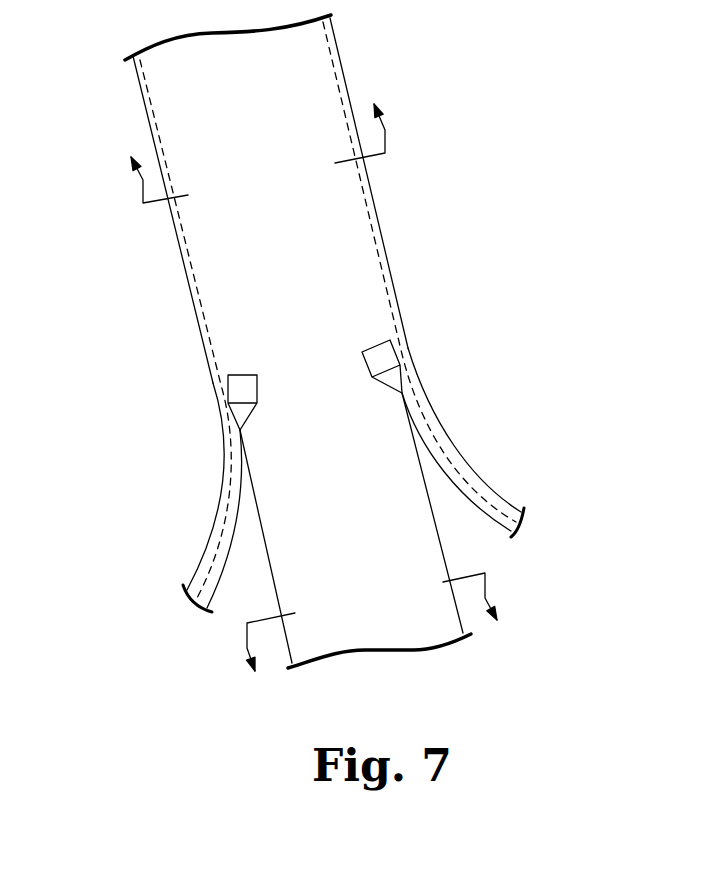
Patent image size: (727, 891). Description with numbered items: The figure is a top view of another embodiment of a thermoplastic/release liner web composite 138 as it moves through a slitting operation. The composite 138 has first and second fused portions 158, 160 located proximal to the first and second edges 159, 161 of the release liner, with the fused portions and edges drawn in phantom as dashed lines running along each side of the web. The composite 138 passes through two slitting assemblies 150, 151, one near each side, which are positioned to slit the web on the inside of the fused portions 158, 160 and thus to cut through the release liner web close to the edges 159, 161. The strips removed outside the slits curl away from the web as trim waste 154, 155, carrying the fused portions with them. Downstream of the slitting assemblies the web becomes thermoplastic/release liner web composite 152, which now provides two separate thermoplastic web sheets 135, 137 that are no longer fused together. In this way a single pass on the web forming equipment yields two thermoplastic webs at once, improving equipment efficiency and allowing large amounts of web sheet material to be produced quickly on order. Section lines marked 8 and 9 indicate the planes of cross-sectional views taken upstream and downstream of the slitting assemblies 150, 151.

The thermoplastic web sheet 135 is at (332, 635).
The thermoplastic web sheet 137 is at (285, 655).
The thermoplastic/release liner web composite 138 is at (301, 63).
The slitting assembly 150 is at (247, 383).
The slitting assembly 151 is at (382, 345).
The thermoplastic/release liner web composite 152 is at (418, 630).
The trim waste 154 is at (213, 562).
The trim waste 155 is at (473, 487).
The fused portion 158 is at (140, 92).
The edge 159 is at (187, 247).
The fused portion 160 is at (340, 58).
The edge 161 is at (366, 184).
The section line 8- 8 is at (253, 138).
The section line 9- 9 is at (382, 640).